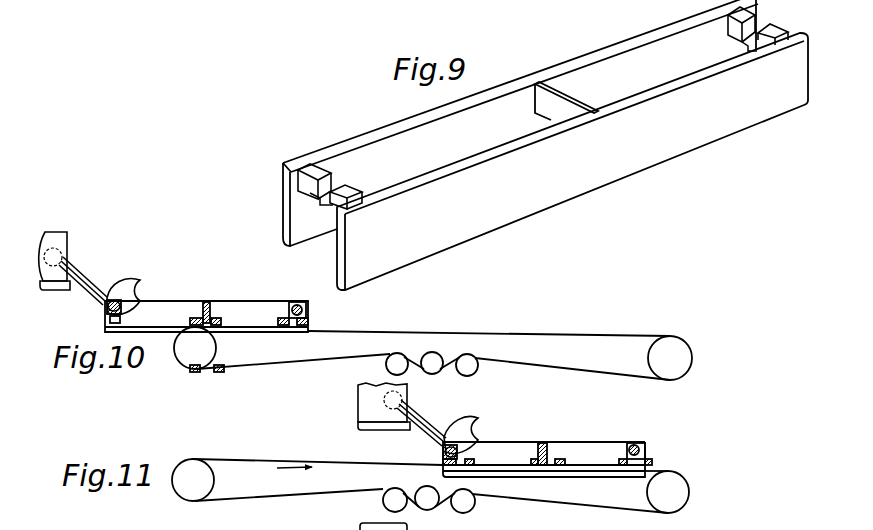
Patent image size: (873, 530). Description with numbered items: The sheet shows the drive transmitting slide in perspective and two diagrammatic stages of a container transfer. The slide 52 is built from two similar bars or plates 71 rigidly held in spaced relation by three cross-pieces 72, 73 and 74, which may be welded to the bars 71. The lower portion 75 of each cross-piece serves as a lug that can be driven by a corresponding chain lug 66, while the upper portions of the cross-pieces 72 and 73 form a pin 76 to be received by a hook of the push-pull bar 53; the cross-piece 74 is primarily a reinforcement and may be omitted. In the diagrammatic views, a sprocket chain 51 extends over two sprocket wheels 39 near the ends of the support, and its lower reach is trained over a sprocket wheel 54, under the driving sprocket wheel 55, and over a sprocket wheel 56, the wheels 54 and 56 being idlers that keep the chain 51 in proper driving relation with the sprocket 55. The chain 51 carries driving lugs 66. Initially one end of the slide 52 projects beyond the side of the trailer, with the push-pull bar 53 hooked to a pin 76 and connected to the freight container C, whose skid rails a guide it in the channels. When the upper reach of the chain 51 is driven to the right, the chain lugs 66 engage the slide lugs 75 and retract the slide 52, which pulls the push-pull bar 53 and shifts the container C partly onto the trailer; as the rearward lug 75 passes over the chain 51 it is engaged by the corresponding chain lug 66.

In FIG. 9, the slide 52 is at (529, 145).
In FIG. 10, the slide 52 is at (370, 336).
In FIG. 11, the slide 52 is at (547, 459).
In FIG. 9, the bars 71 is at (378, 133).
In FIG. 9, the cross-piece 72 is at (356, 191).
In FIG. 10, the cross-piece 72 is at (106, 307).
In FIG. 11, the cross-piece 72 is at (450, 452).
In FIG. 9, the cross-piece 73 is at (727, 29).
In FIG. 10, the cross-piece 73 is at (297, 302).
In FIG. 11, the cross-piece 73 is at (636, 451).
In FIG. 9, the cross-piece 74 is at (575, 99).
In FIG. 10, the cross-piece 74 is at (209, 303).
In FIG. 11, the cross-piece 74 is at (542, 454).
In FIG. 9, the lower portion 75 is at (312, 205).
In FIG. 10, the lower portion 75 is at (288, 312).
In FIG. 9, the pin 76 is at (334, 184).
In FIG. 10, the freight container C is at (68, 238).
In FIG. 11, the freight container C is at (358, 408).
In FIG. 10, the skid rails a is at (48, 283).
In FIG. 11, the skid rails a is at (382, 428).
In FIG. 10, the push-pull bar 53 is at (98, 279).
In FIG. 11, the push-pull bar 53 is at (439, 413).
In FIG. 10, the driving lugs 66 is at (217, 320).
In FIG. 11, the driving lugs 66 is at (547, 479).
In FIG. 10, the sprocket wheels 39 is at (210, 350).
In FIG. 11, the sprocket wheels 39 is at (207, 481).
In FIG. 10, the sprocket chain 51 is at (519, 331).
In FIG. 11, the sprocket chain 51 is at (334, 464).
In FIG. 10, the sprocket wheel 54 is at (397, 359).
In FIG. 11, the sprocket wheel 54 is at (387, 498).
In FIG. 10, the sprocket wheel 55 is at (432, 359).
In FIG. 11, the sprocket wheel 55 is at (428, 491).
In FIG. 10, the sprocket wheel 56 is at (469, 360).
In FIG. 11, the sprocket wheel 56 is at (470, 502).